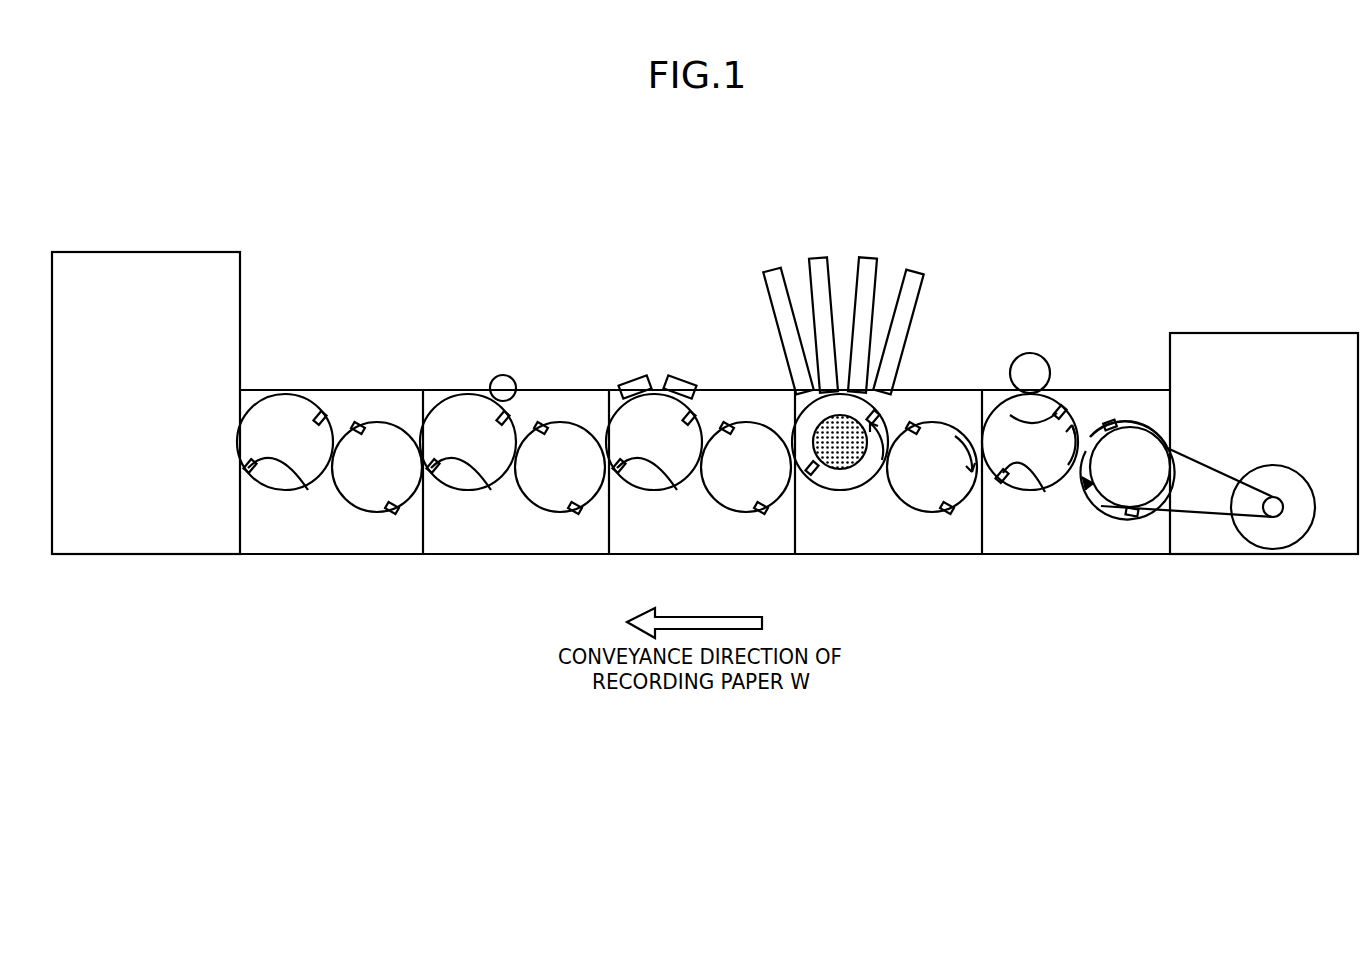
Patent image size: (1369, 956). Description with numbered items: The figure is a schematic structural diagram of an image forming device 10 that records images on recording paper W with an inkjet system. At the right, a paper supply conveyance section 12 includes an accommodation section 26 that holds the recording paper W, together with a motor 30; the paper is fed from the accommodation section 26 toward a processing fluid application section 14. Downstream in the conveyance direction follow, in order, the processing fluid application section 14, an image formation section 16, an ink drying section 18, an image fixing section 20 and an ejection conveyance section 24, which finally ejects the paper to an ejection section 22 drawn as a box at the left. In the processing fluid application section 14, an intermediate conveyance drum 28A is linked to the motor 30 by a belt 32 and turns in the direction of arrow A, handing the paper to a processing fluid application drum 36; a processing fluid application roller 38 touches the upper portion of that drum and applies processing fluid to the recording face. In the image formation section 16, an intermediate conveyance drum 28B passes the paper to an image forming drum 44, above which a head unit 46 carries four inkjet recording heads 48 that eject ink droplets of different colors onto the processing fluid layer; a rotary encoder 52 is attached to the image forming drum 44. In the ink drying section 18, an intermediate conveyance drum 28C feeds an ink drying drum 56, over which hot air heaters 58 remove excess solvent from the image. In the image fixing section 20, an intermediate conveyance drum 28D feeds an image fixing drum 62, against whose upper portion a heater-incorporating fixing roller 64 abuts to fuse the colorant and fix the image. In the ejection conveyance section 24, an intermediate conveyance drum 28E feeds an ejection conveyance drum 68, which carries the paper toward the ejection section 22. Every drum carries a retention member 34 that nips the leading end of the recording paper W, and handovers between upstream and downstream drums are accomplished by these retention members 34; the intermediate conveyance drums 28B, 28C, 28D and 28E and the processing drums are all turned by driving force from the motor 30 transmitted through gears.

The image forming device 10 is at (1160, 200).
The paper supply conveyance section 12 is at (1232, 428).
The processing fluid application section 14 is at (1078, 448).
The image formation section 16 is at (861, 389).
The ink drying section 18 is at (693, 450).
The image fixing section 20 is at (512, 441).
The ejection section 22 is at (168, 245).
The ejection conveyance section 24 is at (329, 450).
The accommodation section 26 is at (1312, 332).
The intermediate conveyance drum 28A is at (1078, 448).
The intermediate conveyance drum 28B is at (881, 503).
The intermediate conveyance drum 28C is at (693, 453).
The intermediate conveyance drum 28D is at (512, 459).
The intermediate conveyance drum 28E is at (329, 499).
The motor 30 is at (1298, 528).
The belt 32 is at (1205, 512).
The retention member 34 is at (701, 461).
The processing fluid application drum 36 is at (1027, 487).
The processing fluid application roller 38 is at (1032, 353).
The image forming drum 44 is at (838, 470).
The head unit 46 is at (838, 280).
The inkjet recording head 48 is at (770, 270).
The rotary encoder 52 is at (826, 465).
The ink drying drum 56 is at (651, 483).
The hot air heater 58 is at (635, 379).
The image fixing drum 62 is at (465, 483).
The fixing roller 64 is at (503, 375).
The ejection conveyance drum 68 is at (282, 483).